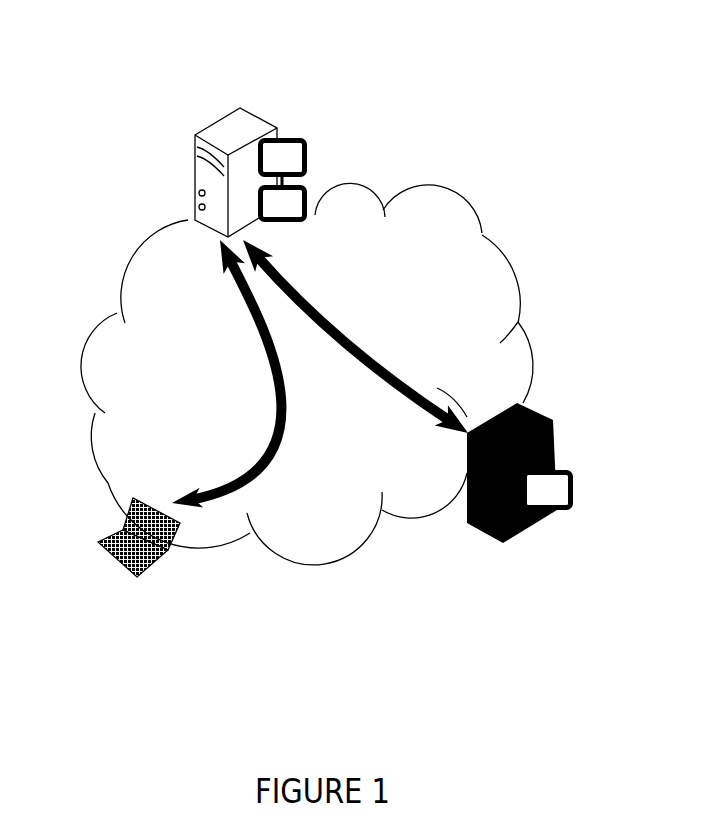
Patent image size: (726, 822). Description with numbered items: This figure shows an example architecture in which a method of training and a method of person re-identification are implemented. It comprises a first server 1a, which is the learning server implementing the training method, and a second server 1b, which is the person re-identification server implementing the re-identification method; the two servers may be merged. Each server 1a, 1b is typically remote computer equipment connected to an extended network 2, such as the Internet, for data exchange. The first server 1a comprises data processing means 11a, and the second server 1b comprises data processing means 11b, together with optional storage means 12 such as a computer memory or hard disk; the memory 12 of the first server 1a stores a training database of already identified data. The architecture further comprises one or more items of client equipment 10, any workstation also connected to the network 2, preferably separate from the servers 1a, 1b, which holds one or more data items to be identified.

The first server 1a is at (532, 528).
The second server 1b is at (240, 103).
The extended network 2 is at (515, 267).
The client equipment 10 is at (103, 543).
The data processing means 11a is at (575, 480).
The data processing means 11b is at (308, 208).
The storage means 12 is at (308, 148).